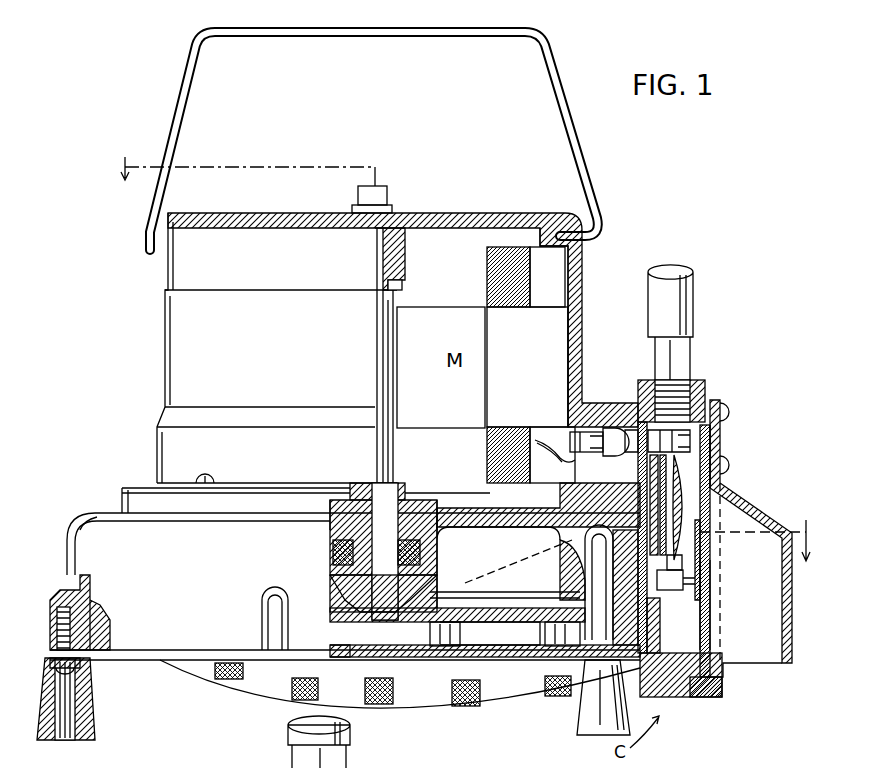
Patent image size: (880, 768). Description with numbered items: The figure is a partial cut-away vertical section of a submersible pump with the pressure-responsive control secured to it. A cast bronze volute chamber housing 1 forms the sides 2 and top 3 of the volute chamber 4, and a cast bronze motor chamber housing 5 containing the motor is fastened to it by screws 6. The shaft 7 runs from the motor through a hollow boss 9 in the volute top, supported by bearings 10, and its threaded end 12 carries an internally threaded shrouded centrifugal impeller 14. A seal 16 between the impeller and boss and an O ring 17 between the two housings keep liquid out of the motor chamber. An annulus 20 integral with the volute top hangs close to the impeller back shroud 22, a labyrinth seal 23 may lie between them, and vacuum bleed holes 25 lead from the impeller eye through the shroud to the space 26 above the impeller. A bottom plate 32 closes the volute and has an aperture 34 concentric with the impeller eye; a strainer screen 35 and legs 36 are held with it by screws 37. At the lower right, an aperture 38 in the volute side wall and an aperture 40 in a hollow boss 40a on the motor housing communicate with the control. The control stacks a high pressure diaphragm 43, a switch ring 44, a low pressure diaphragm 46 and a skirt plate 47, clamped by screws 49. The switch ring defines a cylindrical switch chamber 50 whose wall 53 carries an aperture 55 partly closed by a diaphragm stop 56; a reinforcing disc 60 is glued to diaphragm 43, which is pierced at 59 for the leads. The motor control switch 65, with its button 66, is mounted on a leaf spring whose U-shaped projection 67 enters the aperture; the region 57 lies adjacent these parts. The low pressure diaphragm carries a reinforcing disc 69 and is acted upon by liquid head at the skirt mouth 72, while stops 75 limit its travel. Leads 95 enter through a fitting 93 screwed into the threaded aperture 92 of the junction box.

The volute chamber housing 1 is at (72, 538).
The sides of the volute chamber 2 is at (67, 555).
The top of the volute chamber 3 is at (97, 513).
The volute chamber 4 is at (80, 612).
The motor chamber housing 5 is at (168, 333).
The screws 6 is at (200, 478).
The shaft 7 is at (392, 470).
The hollow boss 9 is at (405, 530).
The bearings 10 is at (400, 490).
The threaded end of shaft 12 is at (358, 580).
The impeller 14 is at (350, 660).
The seal 16 is at (420, 560).
The O ring or gasket 17 is at (572, 490).
The annulus 20 is at (565, 548).
The back shroud 22 is at (512, 592).
The labyrinth seal 23 is at (570, 600).
The vacuum bleed holes 25 is at (465, 600).
The space above the impeller 26 is at (505, 560).
The bottom plate 32 is at (545, 668).
The aperture 34 is at (420, 660).
The strainer plate or screen 35 is at (215, 672).
The legs 36 is at (92, 710).
The screws 37 is at (86, 684).
The aperture 38 is at (625, 550).
The aperture 40 is at (582, 432).
The hollow boss 40a is at (576, 400).
The high pressure responsive diaphragm 43 is at (650, 490).
The switch ring 44 is at (680, 700).
The low pressure responsive diaphragm 46 is at (712, 515).
The skirt plate 47 is at (766, 511).
The screws 49 is at (735, 462).
The switch chamber 50 is at (695, 640).
The chamber wall 53 is at (652, 507).
The aperture 55 is at (652, 524).
The diaphragm stop 56 is at (652, 541).
The switch cavity 57 is at (716, 442).
The pierced portion of diaphragm 59 is at (667, 450).
The brass reinforcing disc 60 is at (655, 612).
The motor control switch 65 is at (676, 580).
The switch button 66 is at (705, 568).
The U-shaped projection 67 is at (630, 596).
The brass reinforcing disc 69 is at (710, 580).
The skirt mouth 72 is at (766, 666).
The stops 75 is at (700, 700).
The threaded aperture 92 is at (705, 395).
The fitting 93 is at (695, 320).
The electrical leads 95 is at (730, 412).